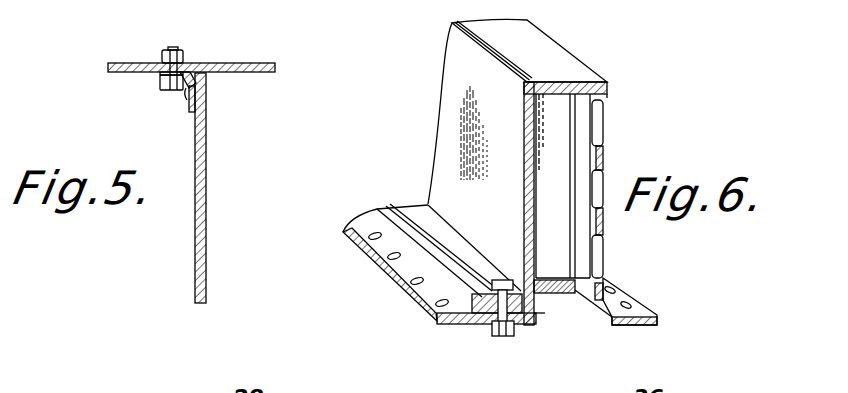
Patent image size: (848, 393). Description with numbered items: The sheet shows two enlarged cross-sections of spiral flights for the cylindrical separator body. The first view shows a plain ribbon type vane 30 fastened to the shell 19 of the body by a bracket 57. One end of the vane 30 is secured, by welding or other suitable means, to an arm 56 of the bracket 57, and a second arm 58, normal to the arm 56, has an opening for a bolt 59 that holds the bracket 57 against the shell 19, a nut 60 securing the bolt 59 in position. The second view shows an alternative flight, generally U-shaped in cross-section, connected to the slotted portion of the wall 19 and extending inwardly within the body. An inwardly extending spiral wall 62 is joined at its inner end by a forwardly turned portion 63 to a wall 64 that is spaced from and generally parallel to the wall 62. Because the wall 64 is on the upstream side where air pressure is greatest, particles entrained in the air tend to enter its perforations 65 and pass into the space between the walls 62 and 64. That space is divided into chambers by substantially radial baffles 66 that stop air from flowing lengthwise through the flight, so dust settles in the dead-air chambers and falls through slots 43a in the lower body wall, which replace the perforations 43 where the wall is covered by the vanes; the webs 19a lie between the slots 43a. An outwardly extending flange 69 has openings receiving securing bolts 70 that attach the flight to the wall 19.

In FIG. 5, the shell 19 is at (266, 64).
In FIG. 5, the vane 30 is at (206, 263).
In FIG. 5, the arm 56 is at (189, 107).
In FIG. 5, the bracket 57 is at (177, 98).
In FIG. 5, the arm 58 is at (191, 77).
In FIG. 5, the bolt 59 is at (162, 62).
In FIG. 5, the nut 60 is at (178, 46).
In FIG. 6, the spiral wall 62 is at (524, 223).
In FIG. 6, the forwardly turned portion 63 is at (578, 82).
In FIG. 6, the wall 64 is at (606, 160).
In FIG. 6, the perforations 65 is at (601, 122).
In FIG. 6, the baffles 66 is at (584, 190).
In FIG. 6, the outwardly extending flange 69 is at (432, 265).
In FIG. 6, the perforations 43 is at (441, 306).
In FIG. 6, the slots 43a is at (560, 305).
In FIG. 6, the securing bolts 70 is at (503, 313).
In FIG. 6, the webs 19a is at (571, 293).